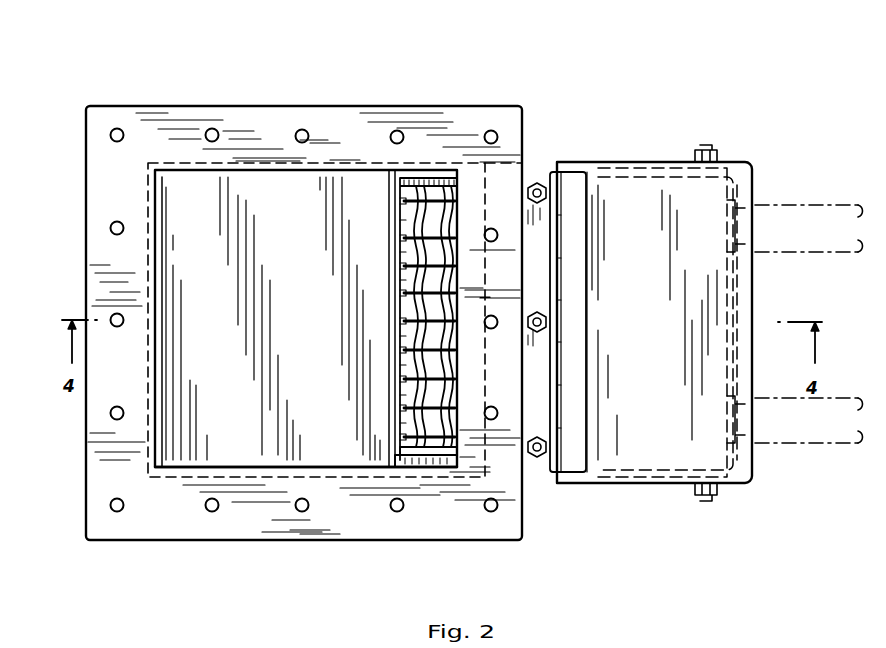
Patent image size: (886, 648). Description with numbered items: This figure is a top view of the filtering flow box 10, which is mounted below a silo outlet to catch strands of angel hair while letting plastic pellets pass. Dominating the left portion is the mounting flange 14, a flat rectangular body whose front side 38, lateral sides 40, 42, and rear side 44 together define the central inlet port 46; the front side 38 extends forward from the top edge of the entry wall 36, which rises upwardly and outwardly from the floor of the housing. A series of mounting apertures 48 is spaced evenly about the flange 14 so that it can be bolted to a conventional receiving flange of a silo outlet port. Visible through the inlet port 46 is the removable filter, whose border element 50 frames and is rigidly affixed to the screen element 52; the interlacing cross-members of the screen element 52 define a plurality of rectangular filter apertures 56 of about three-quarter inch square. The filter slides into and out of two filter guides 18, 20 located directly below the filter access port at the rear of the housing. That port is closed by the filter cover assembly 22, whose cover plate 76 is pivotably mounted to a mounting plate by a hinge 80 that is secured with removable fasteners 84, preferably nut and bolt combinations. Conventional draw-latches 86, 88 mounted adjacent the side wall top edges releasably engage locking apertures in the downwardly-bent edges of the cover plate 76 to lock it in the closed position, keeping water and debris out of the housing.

The filtering flow box 10 is at (812, 107).
The mounting flange 14 is at (197, 541).
The filter guide 18 is at (438, 186).
The filter guide 20 is at (438, 464).
The filter cover assembly 22 is at (613, 160).
The entry wall 36 is at (218, 408).
The front side 38 is at (100, 298).
The lateral side 40 is at (333, 135).
The lateral side 42 is at (280, 522).
The rear side 44 is at (495, 445).
The central inlet port 46 is at (322, 468).
The mounting apertures 48 is at (299, 131).
The border element 50 is at (402, 261).
The screen element 52 is at (440, 393).
The filter apertures 56 is at (420, 332).
The cover plate 76 is at (648, 212).
The hinge 80 is at (575, 435).
The removable fasteners 84 is at (543, 445).
The draw-latch 86 is at (707, 502).
The draw-latch 88 is at (706, 148).